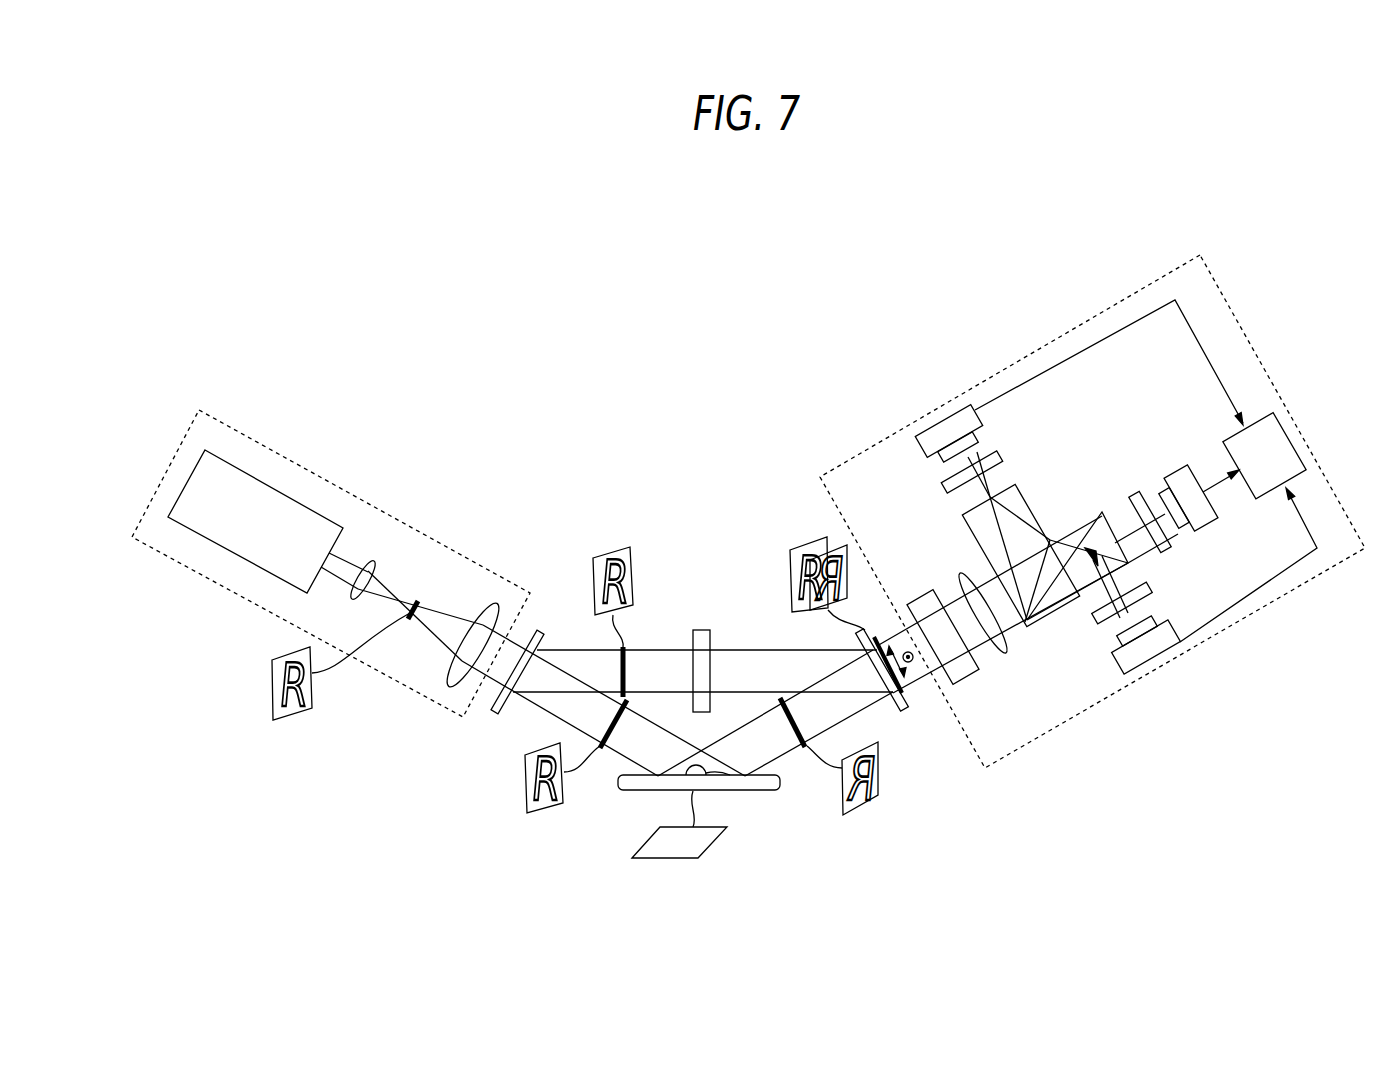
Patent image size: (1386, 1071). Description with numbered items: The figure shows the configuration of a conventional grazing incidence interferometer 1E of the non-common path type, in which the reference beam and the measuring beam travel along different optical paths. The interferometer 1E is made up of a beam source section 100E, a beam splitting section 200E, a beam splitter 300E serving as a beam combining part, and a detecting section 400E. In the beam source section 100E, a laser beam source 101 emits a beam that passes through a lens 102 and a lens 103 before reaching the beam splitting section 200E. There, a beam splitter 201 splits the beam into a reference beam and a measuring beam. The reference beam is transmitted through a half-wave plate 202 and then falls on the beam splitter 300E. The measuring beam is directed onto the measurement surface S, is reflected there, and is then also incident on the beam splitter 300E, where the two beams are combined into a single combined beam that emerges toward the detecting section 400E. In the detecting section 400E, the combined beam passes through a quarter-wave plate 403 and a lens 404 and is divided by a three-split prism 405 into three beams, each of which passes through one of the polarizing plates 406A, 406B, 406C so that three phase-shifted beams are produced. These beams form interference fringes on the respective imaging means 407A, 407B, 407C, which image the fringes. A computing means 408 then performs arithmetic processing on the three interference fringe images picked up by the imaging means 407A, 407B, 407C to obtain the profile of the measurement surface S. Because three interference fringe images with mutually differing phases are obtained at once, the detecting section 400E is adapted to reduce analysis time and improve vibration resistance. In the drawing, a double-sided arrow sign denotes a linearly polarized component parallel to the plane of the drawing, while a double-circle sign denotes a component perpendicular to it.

The grazing incidence interferometer 1E is at (857, 273).
The beam source section 100E is at (312, 470).
The laser beam source 101 is at (241, 470).
The lens 102 is at (370, 568).
The lens 103 is at (478, 612).
The beam splitting section 200E is at (668, 537).
The beam splitter 201 is at (537, 634).
The half-wave plate 202 is at (700, 629).
The measurement surface S is at (743, 790).
The beam splitter 300E is at (905, 712).
The detecting section 400E is at (1070, 330).
The quarter-wave plate 403 is at (920, 606).
The lens 404 is at (960, 580).
The three-split prism 405 is at (1028, 507).
The polarizing plate 406A is at (1000, 457).
The polarizing plate 406B is at (1138, 495).
The polarizing plate 406C is at (1150, 594).
The imaging means 407A is at (937, 417).
The imaging means 407B is at (1180, 468).
The imaging means 407C is at (1165, 658).
The computing means 408 is at (1304, 440).